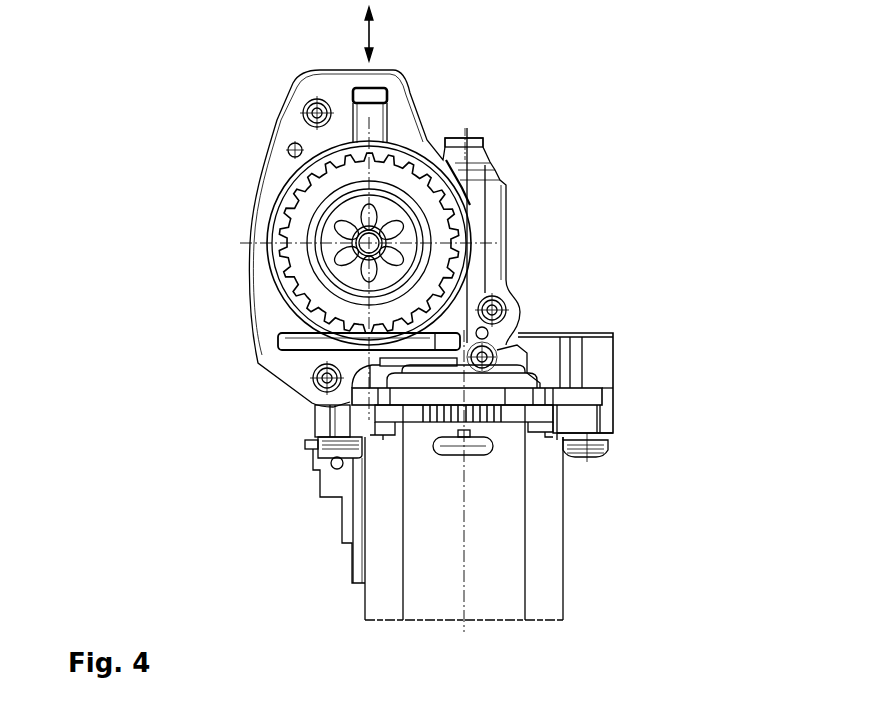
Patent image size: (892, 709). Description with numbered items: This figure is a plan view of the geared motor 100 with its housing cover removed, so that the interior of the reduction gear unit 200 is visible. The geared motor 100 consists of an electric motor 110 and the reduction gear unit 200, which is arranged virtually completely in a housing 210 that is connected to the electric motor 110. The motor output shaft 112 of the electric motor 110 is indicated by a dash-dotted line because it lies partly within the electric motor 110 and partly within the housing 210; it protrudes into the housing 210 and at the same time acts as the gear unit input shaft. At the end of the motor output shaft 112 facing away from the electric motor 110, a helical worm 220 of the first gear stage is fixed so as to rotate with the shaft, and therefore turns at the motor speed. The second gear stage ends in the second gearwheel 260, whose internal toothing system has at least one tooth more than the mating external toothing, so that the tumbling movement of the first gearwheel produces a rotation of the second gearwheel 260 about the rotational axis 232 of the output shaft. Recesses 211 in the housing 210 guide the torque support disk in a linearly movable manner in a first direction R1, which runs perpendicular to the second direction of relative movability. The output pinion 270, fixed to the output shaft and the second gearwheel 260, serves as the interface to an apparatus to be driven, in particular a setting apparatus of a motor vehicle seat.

The geared motor 100 is at (202, 176).
The electric motor 110 is at (545, 545).
The motor output shaft 112 is at (465, 150).
The reduction gear unit 200 is at (563, 283).
The housing 210 is at (263, 325).
The recesses 211 is at (360, 97).
The worm 220 is at (462, 201).
The rotational axis 232 is at (372, 246).
The second gearwheel 260 is at (276, 245).
The output pinion 270 is at (345, 227).
The first direction R1 is at (372, 33).